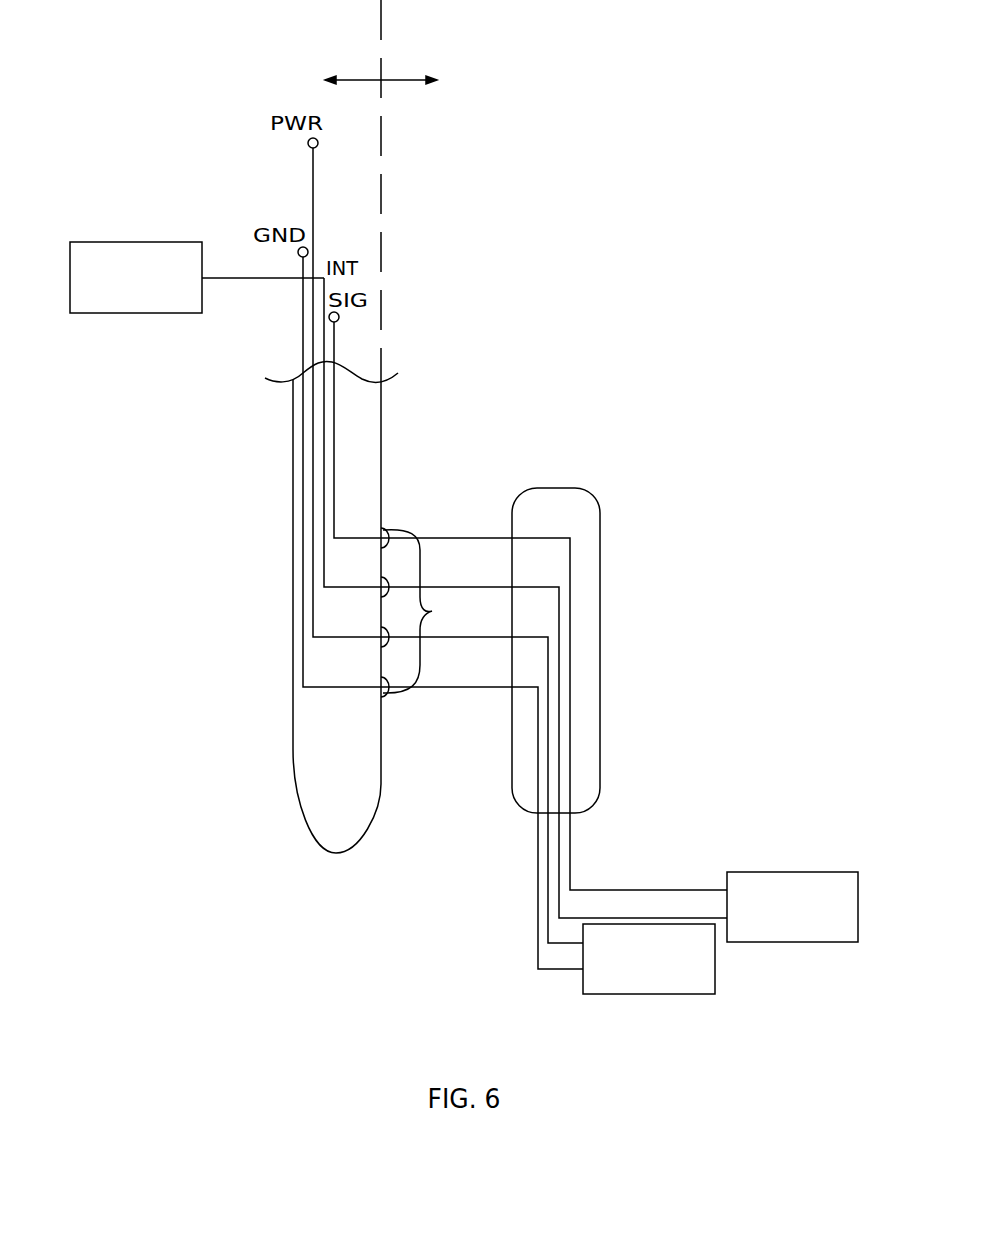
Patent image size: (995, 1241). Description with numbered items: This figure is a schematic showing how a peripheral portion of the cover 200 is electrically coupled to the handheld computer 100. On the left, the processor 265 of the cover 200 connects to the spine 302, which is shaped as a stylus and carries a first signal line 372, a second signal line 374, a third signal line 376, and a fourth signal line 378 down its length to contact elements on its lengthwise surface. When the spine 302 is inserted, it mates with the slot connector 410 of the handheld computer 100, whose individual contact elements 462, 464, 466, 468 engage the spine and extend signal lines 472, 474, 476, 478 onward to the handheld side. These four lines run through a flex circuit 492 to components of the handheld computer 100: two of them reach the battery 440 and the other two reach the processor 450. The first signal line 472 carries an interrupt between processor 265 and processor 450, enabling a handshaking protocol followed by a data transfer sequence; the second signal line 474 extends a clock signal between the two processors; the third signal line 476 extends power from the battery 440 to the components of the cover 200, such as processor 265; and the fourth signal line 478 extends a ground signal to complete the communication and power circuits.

The handheld computer 100 is at (477, 43).
The cover 200 is at (319, 58).
The processor 265 is at (120, 250).
The spine 302 is at (289, 840).
The first signal line 372 is at (304, 645).
The second signal line 374 is at (314, 595).
The third signal line 376 is at (325, 545).
The fourth signal line 378 is at (336, 495).
The slot connector 410 is at (432, 611).
The battery 440 is at (682, 984).
The processor 450 is at (810, 932).
The contact element 462 is at (390, 528).
The contact element 464 is at (390, 582).
The contact element 466 is at (397, 640).
The contact element 468 is at (397, 697).
The first signal line 472 is at (490, 540).
The second signal line 474 is at (492, 588).
The third signal line 476 is at (492, 637).
The fourth signal line 478 is at (492, 687).
The flex circuit 492 is at (585, 788).